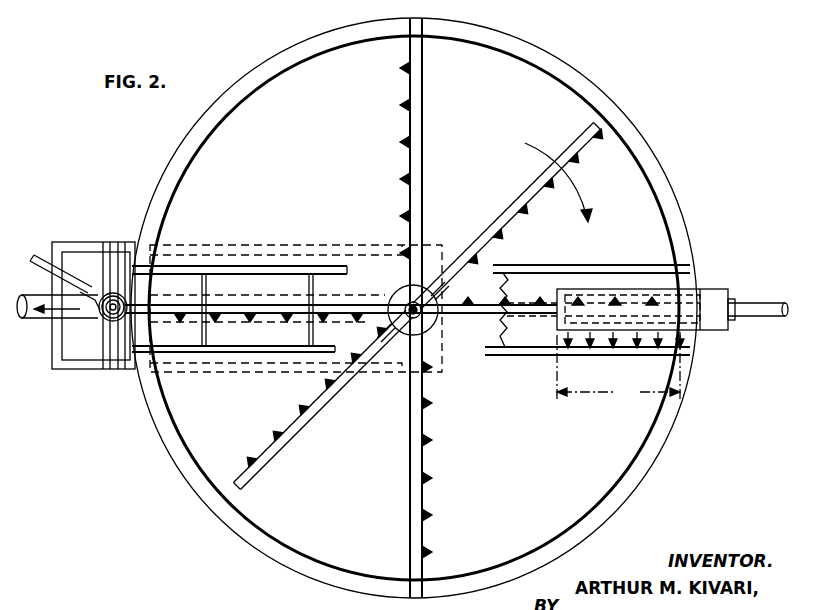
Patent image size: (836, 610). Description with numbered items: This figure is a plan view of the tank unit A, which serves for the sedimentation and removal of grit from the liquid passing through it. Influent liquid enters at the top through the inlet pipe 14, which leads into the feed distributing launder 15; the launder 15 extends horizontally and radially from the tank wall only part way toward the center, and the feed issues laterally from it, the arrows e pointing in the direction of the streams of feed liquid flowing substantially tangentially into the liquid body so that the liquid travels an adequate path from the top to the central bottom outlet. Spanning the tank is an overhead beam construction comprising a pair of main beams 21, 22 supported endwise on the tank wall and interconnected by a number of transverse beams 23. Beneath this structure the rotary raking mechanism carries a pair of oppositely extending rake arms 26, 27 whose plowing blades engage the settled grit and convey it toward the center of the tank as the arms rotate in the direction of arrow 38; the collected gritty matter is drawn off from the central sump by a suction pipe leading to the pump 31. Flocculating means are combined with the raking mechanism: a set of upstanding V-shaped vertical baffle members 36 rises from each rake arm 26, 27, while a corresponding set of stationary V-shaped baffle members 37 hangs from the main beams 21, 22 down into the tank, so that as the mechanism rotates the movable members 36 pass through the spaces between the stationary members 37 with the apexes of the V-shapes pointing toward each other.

The tank unit A is at (600, 78).
The inlet pipe 14 is at (762, 319).
The feed distributing launder 15 is at (626, 332).
The main beam 21 is at (257, 267).
The main beam 22 is at (236, 353).
The transverse beams 23 is at (207, 278).
The rake arm 26 is at (302, 424).
The rake arm 27 is at (518, 201).
The pump 31 is at (100, 319).
The upstanding vertical baffle members 36 is at (330, 384).
The stationary vertical baffle members 37 is at (400, 106).
The arrow 38 is at (580, 189).
The arrows e is at (590, 343).